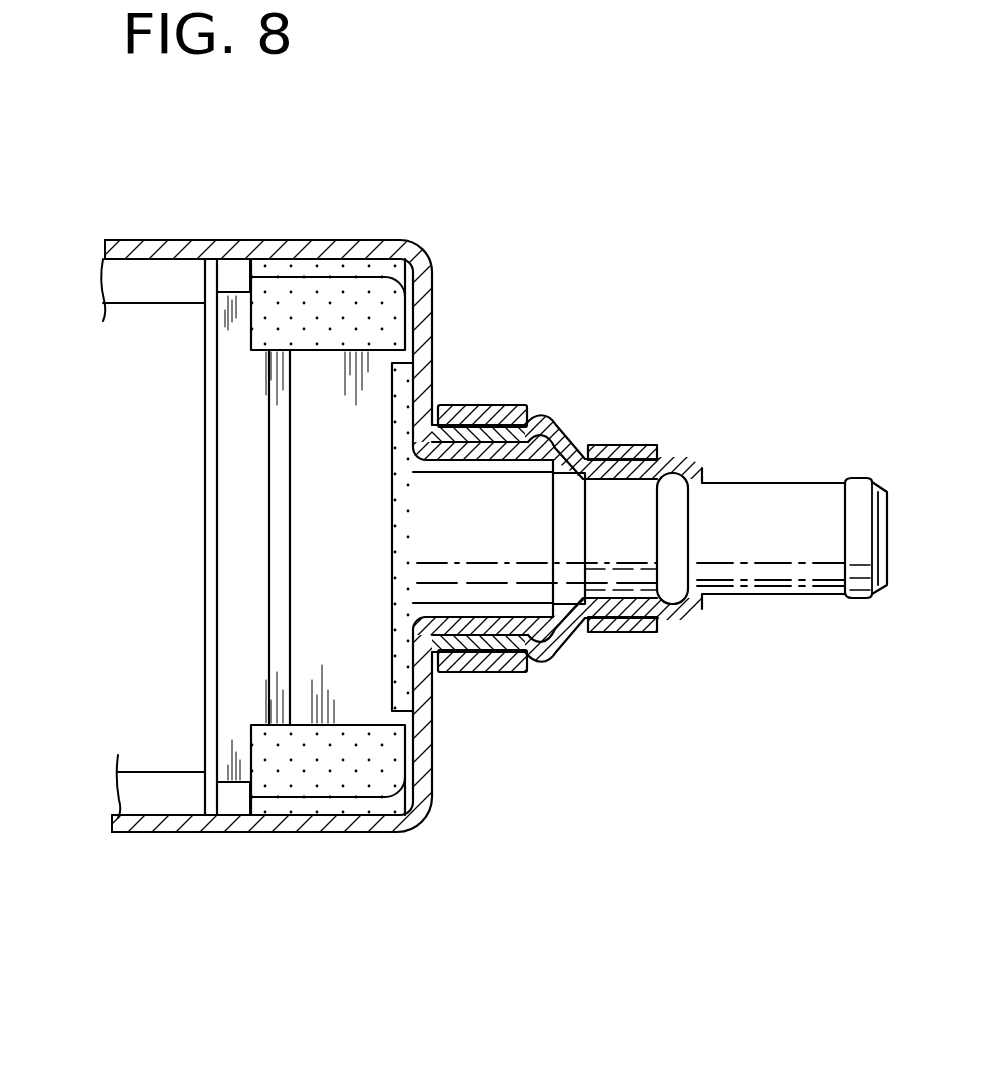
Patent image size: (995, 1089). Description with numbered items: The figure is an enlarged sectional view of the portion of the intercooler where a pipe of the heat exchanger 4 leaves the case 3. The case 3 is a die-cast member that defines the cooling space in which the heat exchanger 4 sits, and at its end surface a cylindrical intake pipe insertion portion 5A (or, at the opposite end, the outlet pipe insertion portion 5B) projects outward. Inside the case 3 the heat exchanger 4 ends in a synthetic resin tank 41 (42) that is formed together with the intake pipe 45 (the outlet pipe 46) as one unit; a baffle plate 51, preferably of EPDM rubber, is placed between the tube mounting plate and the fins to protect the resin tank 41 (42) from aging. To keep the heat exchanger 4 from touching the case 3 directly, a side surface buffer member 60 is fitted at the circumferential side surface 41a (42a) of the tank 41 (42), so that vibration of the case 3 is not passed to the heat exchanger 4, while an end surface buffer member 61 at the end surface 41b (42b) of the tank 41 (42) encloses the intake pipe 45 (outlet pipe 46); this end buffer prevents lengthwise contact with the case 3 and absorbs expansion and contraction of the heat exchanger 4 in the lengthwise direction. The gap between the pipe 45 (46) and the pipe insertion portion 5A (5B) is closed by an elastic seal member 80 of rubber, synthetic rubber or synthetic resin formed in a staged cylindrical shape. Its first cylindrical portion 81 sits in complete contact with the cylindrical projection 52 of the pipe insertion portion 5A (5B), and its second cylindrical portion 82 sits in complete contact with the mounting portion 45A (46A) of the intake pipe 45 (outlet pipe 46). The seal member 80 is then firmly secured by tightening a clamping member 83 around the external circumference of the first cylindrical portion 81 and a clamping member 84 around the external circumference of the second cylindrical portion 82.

The case 3 is at (351, 821).
The heat exchanger 4 is at (356, 689).
The intake pipe insertion portion 5A is at (586, 424).
The outlet pipe insertion portion 5B is at (506, 370).
The tank 41 is at (330, 271).
The tank 42 is at (332, 387).
The circumferential side surface 41a is at (186, 537).
The circumferential side surface 42a is at (330, 556).
The end surface 41b is at (504, 445).
The end surface 42b is at (430, 387).
The intake pipe 45 is at (558, 660).
The outlet pipe 46 is at (610, 574).
The mounting portion 45A is at (703, 627).
The mounting portion 46A is at (634, 552).
The baffle plate 51 is at (208, 796).
The cylindrical projection 52 is at (504, 630).
The side surface buffer member 60 is at (297, 774).
The end surface buffer member 61 is at (556, 443).
The seal member 80 is at (673, 460).
The first cylindrical portion 81 is at (508, 427).
The second cylindrical portion 82 is at (620, 483).
The clamping member 83 is at (467, 413).
The clamping member 84 is at (638, 449).